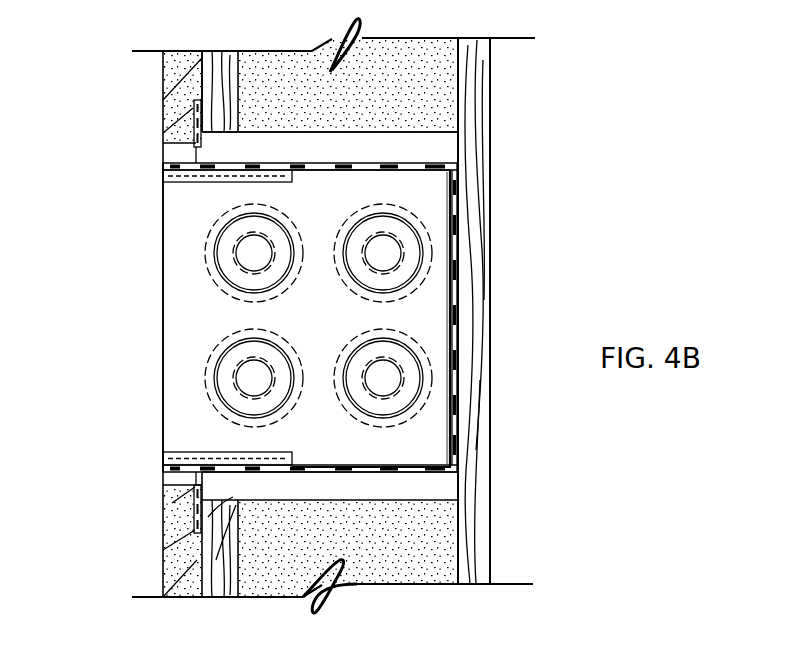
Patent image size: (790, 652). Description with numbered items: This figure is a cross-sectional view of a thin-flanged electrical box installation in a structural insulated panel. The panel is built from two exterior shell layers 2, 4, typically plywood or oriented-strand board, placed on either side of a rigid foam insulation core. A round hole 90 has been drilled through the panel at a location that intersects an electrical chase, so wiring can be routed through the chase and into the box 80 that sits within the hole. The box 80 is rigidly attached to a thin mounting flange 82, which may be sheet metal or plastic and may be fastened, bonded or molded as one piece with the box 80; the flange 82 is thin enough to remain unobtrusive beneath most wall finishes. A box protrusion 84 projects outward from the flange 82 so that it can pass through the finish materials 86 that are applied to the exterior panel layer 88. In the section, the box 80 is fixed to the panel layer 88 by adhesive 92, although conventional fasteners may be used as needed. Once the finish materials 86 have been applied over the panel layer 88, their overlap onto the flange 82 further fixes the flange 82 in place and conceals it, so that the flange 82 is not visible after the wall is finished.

The exterior shell layer 2 is at (209, 44).
The exterior shell layer 4 is at (497, 225).
The box 80 is at (188, 313).
The mounting flange 82 is at (170, 139).
The box protrusion 84 is at (178, 177).
The finish materials 86 is at (175, 113).
The exterior panel layer 88 is at (447, 104).
The round hole 90 is at (420, 484).
The adhesive 92 is at (203, 117).